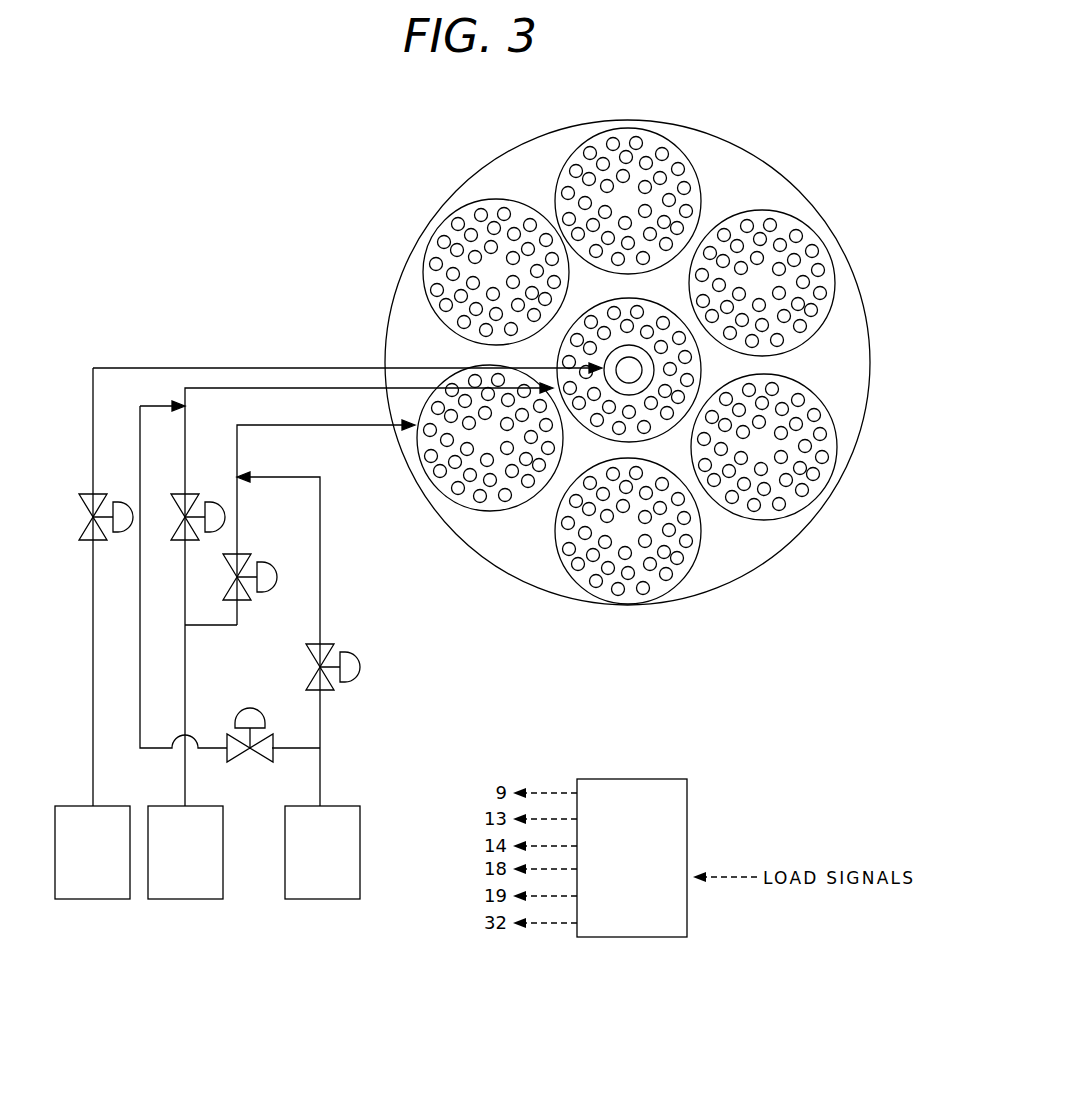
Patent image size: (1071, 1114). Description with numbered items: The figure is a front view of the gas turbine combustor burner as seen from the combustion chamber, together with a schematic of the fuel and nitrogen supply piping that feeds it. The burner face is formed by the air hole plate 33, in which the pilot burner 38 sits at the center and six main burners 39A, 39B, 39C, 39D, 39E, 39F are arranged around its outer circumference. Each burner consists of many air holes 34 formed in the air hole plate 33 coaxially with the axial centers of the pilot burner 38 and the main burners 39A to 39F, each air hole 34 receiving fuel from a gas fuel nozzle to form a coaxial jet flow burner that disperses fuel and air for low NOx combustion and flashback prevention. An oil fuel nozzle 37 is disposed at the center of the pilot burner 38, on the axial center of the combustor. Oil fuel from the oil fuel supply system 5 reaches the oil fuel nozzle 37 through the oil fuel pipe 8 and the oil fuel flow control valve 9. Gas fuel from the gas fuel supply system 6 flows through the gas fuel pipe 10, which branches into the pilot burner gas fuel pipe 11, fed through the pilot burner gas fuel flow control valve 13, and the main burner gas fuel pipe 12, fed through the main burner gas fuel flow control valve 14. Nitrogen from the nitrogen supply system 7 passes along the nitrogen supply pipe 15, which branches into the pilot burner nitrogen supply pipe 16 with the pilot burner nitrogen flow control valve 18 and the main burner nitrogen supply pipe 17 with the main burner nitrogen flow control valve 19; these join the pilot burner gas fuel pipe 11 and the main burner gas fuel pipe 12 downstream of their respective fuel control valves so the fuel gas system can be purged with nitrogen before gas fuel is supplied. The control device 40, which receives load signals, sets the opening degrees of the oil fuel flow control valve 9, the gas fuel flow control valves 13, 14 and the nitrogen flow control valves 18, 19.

The oil fuel supply system 5 is at (92, 852).
The gas fuel supply system 6 is at (185, 852).
The nitrogen supply system 7 is at (322, 852).
The oil fuel pipe 8 is at (62, 587).
The oil fuel flow control valve 9 is at (82, 517).
The gas fuel pipe 10 is at (369, 594).
The pilot burner gas fuel pipe 11 is at (347, 358).
The main burner gas fuel pipe 12 is at (326, 522).
The pilot burner gas fuel flow control valve 13 is at (240, 517).
The main burner gas fuel flow control valve 14 is at (291, 576).
The nitrogen supply pipe 15 is at (360, 777).
The pilot burner nitrogen supply pipe 16 is at (230, 574).
The main burner nitrogen supply pipe 17 is at (319, 610).
The pilot burner nitrogen flow control valve 18 is at (250, 769).
The main burner nitrogen flow control valve 19 is at (373, 667).
The air hole plate 33 is at (627, 362).
The air hole 34 is at (670, 555).
The oil fuel nozzle 37 is at (633, 372).
The pilot burner 38 is at (589, 431).
The main burner 39A is at (690, 158).
The main burner 39B is at (822, 238).
The main burner 39C is at (823, 401).
The main burner 39D is at (632, 603).
The main burner 39E is at (460, 507).
The main burner 39F is at (423, 269).
The control device 40 is at (673, 858).